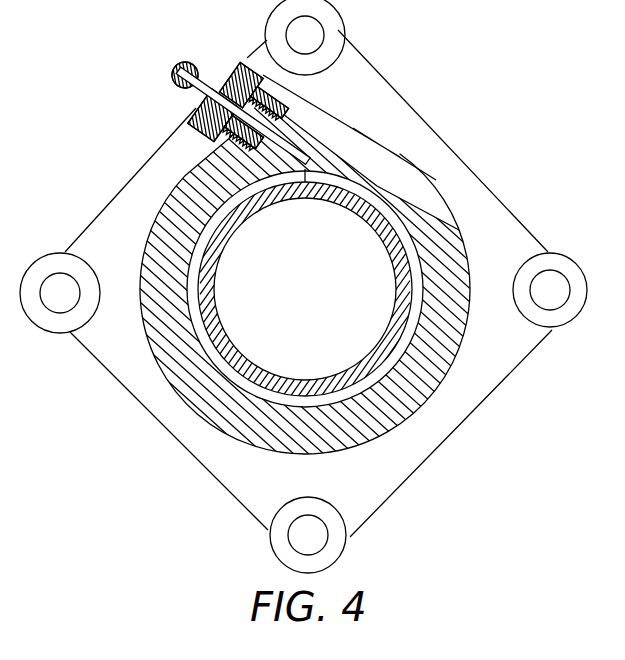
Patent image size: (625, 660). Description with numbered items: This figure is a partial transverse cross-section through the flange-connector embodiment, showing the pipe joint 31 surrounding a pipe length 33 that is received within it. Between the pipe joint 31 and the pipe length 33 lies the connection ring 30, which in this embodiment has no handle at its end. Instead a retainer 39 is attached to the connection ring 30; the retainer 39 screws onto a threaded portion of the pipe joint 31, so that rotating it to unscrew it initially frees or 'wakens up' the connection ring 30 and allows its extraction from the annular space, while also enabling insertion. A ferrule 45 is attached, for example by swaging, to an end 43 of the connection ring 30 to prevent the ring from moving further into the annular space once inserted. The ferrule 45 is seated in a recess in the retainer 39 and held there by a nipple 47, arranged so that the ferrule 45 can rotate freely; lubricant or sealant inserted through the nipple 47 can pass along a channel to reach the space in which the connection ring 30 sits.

The connection ring 30 is at (420, 288).
The pipe joint 31 is at (143, 262).
The pipe length 33 is at (214, 288).
The retainer 39 is at (186, 114).
The end 43 is at (218, 143).
The ferrule 45 is at (218, 143).
The nipple 47 is at (231, 152).